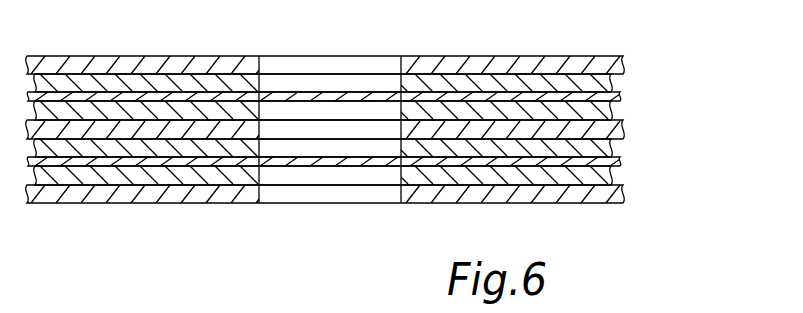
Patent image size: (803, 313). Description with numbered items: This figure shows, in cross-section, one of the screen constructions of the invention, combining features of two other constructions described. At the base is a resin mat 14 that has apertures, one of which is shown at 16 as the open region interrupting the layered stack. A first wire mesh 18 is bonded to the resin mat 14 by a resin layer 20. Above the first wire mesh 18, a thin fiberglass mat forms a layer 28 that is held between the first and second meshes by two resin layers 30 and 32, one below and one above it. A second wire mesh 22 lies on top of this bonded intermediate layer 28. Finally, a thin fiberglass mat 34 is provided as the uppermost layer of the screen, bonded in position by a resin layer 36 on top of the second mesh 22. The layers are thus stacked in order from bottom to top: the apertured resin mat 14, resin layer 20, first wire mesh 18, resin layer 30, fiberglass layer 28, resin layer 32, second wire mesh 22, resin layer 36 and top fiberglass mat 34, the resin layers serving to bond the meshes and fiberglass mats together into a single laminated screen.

The resin mat 14 is at (608, 196).
The aperture 16 is at (331, 195).
The first wire mesh 18 is at (614, 159).
The resin layer 20 is at (616, 181).
The second wire mesh 22 is at (623, 97).
The thin fiberglass mat layer 28 is at (623, 130).
The resin layer 30 is at (615, 146).
The resin layer 32 is at (601, 112).
The thin fiberglass mat 34 is at (609, 62).
The resin layer 36 is at (604, 82).